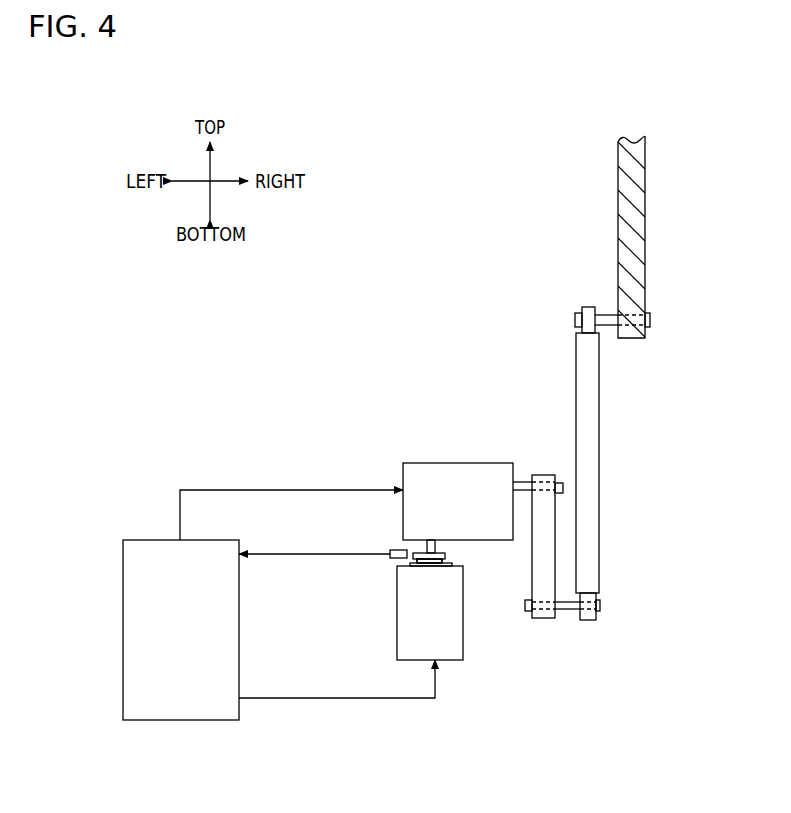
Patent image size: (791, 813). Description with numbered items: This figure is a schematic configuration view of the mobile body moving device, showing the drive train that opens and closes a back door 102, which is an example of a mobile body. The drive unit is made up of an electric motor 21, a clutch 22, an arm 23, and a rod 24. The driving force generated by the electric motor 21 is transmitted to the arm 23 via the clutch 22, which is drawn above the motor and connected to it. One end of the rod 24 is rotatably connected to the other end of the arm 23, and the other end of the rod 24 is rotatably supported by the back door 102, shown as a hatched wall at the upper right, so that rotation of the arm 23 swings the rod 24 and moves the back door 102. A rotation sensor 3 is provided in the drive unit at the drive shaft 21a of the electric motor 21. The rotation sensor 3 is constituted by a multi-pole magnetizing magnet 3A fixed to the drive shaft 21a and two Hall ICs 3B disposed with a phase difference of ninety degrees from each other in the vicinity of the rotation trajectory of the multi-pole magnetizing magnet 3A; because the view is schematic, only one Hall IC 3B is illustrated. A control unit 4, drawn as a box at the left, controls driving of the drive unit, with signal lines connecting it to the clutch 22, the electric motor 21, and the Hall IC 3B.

The back door 102 is at (645, 249).
The rod 24 is at (576, 370).
The arm 23 is at (548, 474).
The clutch 22 is at (447, 462).
The drive shaft 21a is at (436, 549).
The electric motor 21 is at (463, 622).
The rotation sensor 3 is at (337, 577).
The multi-pole magnetizing magnet 3A is at (417, 566).
The Hall IC 3B is at (390, 559).
The control unit 4 is at (190, 637).